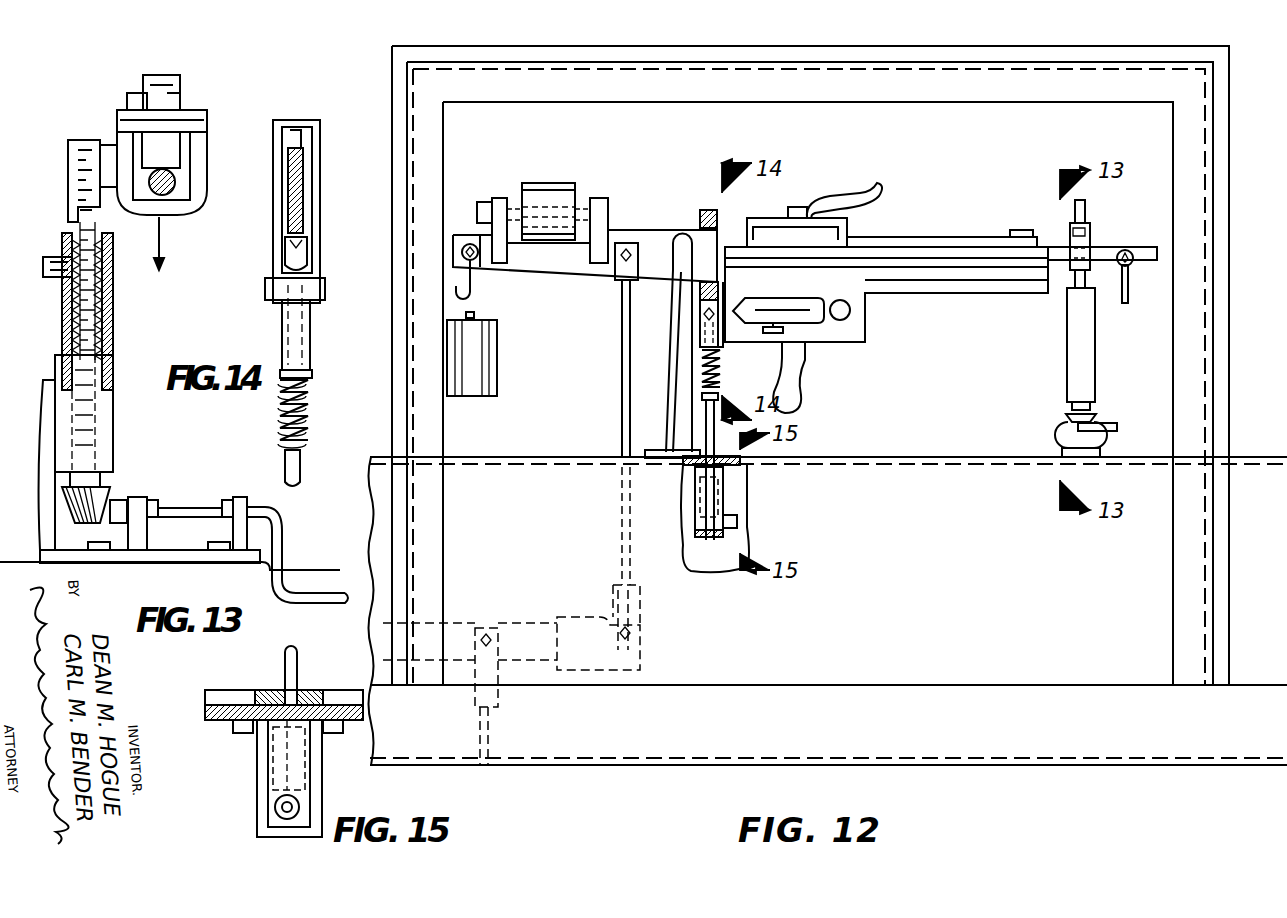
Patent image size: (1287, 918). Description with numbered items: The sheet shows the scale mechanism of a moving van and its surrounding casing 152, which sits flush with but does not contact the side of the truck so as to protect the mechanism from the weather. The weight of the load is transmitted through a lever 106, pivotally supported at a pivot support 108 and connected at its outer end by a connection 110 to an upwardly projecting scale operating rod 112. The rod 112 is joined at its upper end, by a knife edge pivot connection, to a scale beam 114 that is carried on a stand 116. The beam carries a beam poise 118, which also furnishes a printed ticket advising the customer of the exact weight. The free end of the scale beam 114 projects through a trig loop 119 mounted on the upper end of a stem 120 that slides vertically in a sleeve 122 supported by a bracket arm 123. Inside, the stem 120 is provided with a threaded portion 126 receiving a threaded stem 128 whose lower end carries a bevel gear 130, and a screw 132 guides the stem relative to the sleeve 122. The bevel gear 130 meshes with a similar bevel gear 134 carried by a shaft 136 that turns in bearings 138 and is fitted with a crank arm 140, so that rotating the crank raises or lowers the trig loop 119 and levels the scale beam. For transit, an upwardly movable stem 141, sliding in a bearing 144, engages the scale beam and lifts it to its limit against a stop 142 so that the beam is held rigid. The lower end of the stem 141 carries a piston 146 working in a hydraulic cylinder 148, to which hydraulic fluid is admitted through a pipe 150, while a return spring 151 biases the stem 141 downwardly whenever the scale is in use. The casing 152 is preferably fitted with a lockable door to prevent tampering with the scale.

In FIG. 12, the lever 106 is at (546, 600).
In FIG. 12, the pivot support 108 is at (494, 612).
In FIG. 12, the connection 110 is at (580, 619).
In FIG. 12, the scale operating rod 112 is at (622, 428).
In FIG. 12, the scale beam 114 is at (643, 230).
In FIG. 14, the scale beam 114 is at (298, 206).
In FIG. 12, the stand 116 is at (670, 365).
In FIG. 12, the beam poise 118 is at (850, 228).
In FIG. 12, the trig loop 119 is at (1090, 238).
In FIG. 13, the trig loop 119 is at (198, 190).
In FIG. 12, the stem 120 is at (1074, 288).
In FIG. 13, the stem 120 is at (70, 152).
In FIG. 12, the sleeve 122 is at (1070, 354).
In FIG. 13, the sleeve 122 is at (112, 296).
In FIG. 13, the bracket arm 123 is at (44, 490).
In FIG. 13, the threaded portion 126 is at (106, 254).
In FIG. 13, the threaded stem 128 is at (62, 324).
In FIG. 12, the bevel gear 130 is at (1070, 414).
In FIG. 13, the bevel gear 130 is at (107, 486).
In FIG. 13, the screw 132 is at (46, 266).
In FIG. 12, the bevel gear 134 is at (1070, 434).
In FIG. 13, the bevel gear 134 is at (132, 500).
In FIG. 13, the shaft 136 is at (190, 506).
In FIG. 12, the bearings 138 is at (1070, 443).
In FIG. 13, the bearings 138 is at (244, 498).
In FIG. 12, the crank arm 140 is at (1110, 426).
In FIG. 13, the crank arm 140 is at (308, 586).
In FIG. 14, the crank arm 140 is at (300, 262).
In FIG. 12, the stem 141 is at (714, 294).
In FIG. 15, the stem 141 is at (286, 672).
In FIG. 12, the stop 142 is at (717, 220).
In FIG. 14, the stop 142 is at (316, 138).
In FIG. 12, the bearing 144 is at (706, 328).
In FIG. 14, the bearing 144 is at (282, 340).
In FIG. 12, the piston 146 is at (730, 508).
In FIG. 15, the piston 146 is at (268, 778).
In FIG. 12, the hydraulic cylinder 148 is at (694, 500).
In FIG. 15, the hydraulic cylinder 148 is at (266, 754).
In FIG. 12, the pipe 150 is at (737, 522).
In FIG. 15, the pipe 150 is at (274, 808).
In FIG. 12, the return spring 151 is at (720, 380).
In FIG. 14, the return spring 151 is at (306, 388).
In FIG. 12, the casing 152 is at (1230, 164).